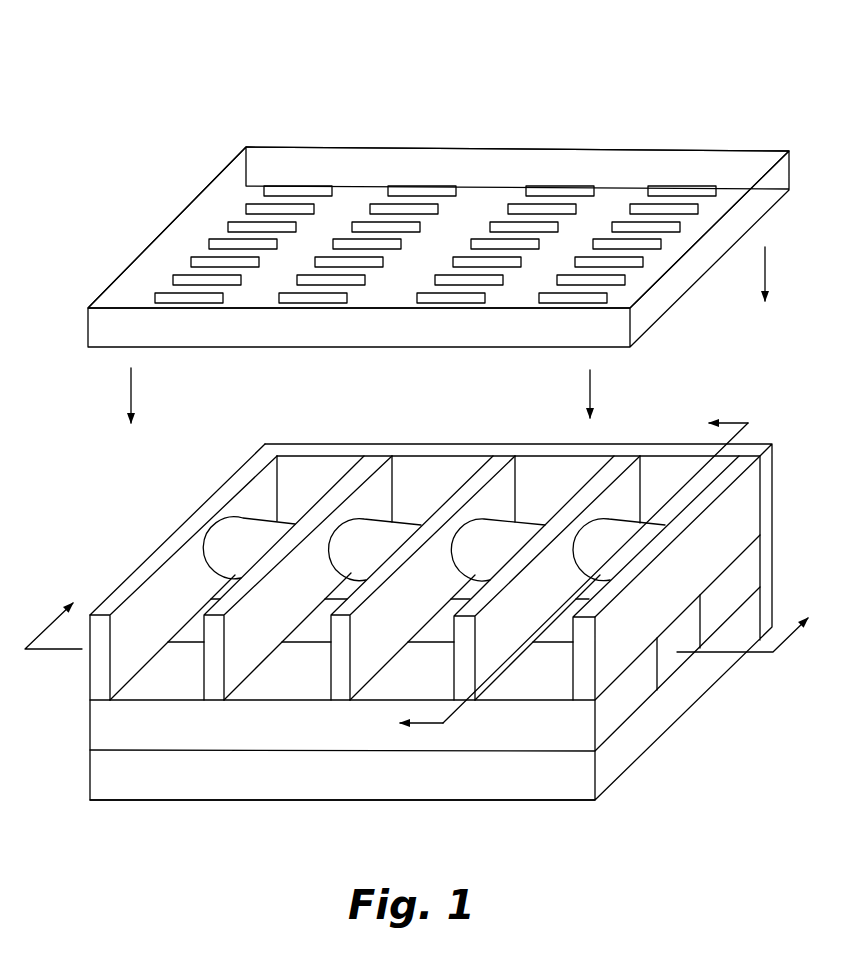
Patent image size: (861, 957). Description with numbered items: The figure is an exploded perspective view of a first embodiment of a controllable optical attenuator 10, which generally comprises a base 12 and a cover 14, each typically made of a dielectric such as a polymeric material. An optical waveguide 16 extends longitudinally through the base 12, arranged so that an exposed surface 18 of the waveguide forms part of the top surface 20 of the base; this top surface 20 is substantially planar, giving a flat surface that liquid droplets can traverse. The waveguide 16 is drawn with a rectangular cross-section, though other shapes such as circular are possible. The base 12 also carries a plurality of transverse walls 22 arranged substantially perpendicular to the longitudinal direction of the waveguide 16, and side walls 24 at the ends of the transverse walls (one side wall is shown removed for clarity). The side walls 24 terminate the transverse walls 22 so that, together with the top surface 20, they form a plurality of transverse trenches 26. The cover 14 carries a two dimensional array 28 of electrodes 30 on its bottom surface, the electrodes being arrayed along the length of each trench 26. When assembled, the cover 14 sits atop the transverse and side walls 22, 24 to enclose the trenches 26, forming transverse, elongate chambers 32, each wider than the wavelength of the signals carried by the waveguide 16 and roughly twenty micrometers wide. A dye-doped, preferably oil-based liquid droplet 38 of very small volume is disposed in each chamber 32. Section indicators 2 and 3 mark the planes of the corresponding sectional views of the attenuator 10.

The controllable optical attenuator 10 is at (629, 56).
The base 12 is at (84, 456).
The cover 14 is at (765, 119).
The optical waveguide 16 is at (668, 663).
The exposed surface 18 is at (558, 632).
The top surface 20 is at (280, 687).
The transverse walls 22 is at (220, 500).
The side walls 24 is at (438, 448).
The transverse trenches 26 is at (162, 683).
The two dimensional array 28 is at (366, 163).
The electrodes 30 is at (427, 192).
The transverse chambers 32 is at (329, 470).
The liquid droplet 38 is at (346, 553).
The section line 2- 2 is at (564, 574).
The section line 3- 3 is at (422, 616).